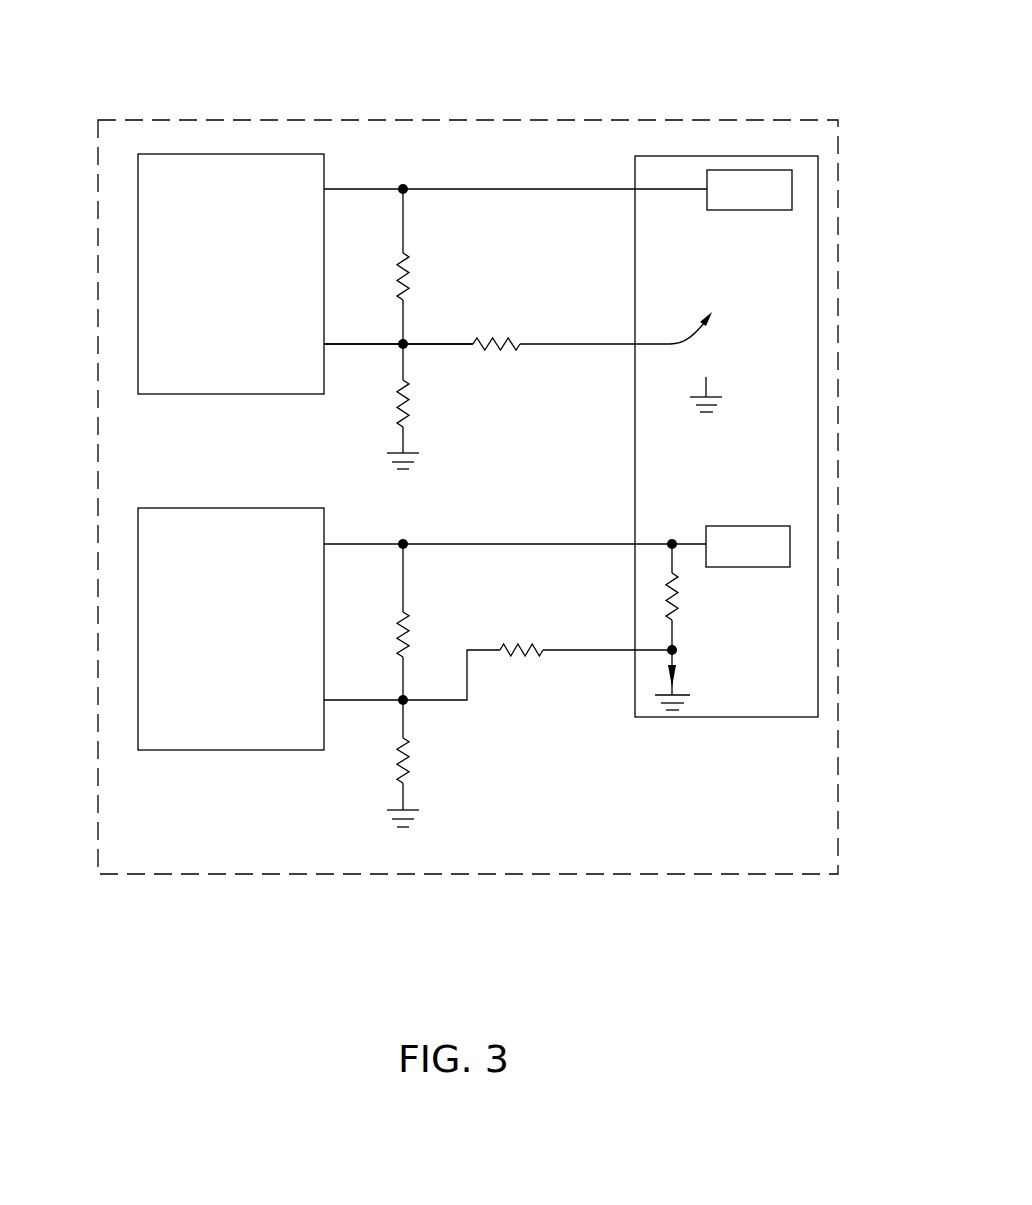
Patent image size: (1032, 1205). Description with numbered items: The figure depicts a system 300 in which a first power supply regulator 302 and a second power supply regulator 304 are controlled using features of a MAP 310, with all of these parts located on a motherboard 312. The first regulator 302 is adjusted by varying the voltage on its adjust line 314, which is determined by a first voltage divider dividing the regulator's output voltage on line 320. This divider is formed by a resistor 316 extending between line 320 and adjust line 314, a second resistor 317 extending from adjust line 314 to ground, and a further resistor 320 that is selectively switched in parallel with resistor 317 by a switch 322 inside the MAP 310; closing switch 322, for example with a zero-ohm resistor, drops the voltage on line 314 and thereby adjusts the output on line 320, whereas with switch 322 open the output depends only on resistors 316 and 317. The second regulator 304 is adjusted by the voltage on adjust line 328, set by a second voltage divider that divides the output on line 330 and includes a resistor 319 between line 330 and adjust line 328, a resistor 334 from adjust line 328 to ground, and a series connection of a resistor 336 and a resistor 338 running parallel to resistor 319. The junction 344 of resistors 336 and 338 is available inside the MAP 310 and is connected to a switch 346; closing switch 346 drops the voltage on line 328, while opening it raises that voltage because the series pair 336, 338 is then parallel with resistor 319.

The system 300 is at (333, 76).
The first power supply regulator 302 is at (138, 258).
The second power supply regulator 304 is at (138, 612).
The MAP 310 is at (818, 352).
The motherboard 312 is at (575, 120).
The adjust line 314 is at (440, 346).
The resistor 316 is at (403, 273).
The second resistor 317 is at (405, 400).
The resistor 319 is at (418, 628).
The line 320 is at (515, 189).
The switch 322 is at (720, 340).
The adjust line 328 is at (440, 702).
The line 330 is at (515, 544).
The resistor 334 is at (395, 765).
The resistor 336 is at (668, 580).
The resistor 338 is at (510, 655).
The junction 344 is at (677, 649).
The switch 346 is at (672, 668).